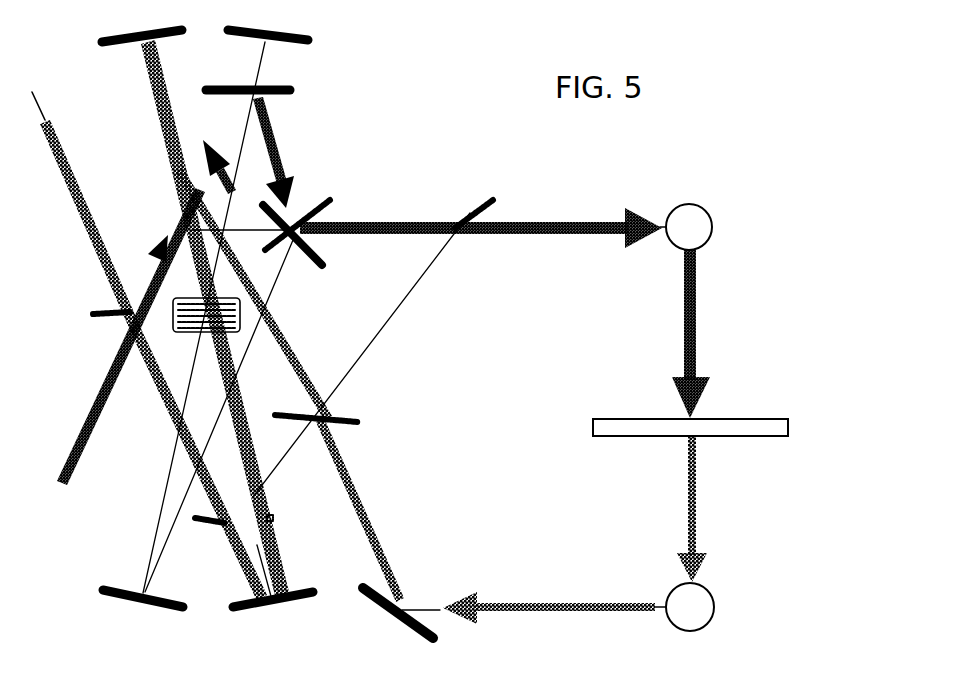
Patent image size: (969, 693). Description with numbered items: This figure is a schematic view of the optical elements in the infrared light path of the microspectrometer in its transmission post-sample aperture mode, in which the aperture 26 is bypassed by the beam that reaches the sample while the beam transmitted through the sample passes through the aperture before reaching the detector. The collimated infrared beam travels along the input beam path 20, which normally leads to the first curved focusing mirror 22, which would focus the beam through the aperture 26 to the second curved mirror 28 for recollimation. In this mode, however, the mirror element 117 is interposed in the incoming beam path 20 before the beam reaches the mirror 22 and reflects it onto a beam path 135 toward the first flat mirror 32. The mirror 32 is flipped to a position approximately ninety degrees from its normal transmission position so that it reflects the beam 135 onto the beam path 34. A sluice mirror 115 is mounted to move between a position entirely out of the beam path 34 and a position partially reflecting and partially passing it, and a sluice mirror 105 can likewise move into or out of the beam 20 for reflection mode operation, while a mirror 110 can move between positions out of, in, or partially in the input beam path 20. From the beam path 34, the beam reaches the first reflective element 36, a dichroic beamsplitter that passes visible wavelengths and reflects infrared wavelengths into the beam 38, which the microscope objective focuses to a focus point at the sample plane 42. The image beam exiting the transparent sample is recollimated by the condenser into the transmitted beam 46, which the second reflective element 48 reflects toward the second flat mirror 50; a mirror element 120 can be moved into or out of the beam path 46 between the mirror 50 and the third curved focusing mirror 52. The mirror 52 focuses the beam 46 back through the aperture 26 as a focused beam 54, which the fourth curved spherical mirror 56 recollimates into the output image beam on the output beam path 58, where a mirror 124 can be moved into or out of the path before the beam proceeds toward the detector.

The input beam path 20 is at (62, 455).
The first curved focusing mirror 22 is at (238, 32).
The aperture 26 is at (168, 328).
The second curved mirror 28 is at (114, 590).
The first flat mirror 32 is at (311, 268).
The beam 34 is at (400, 218).
The first reflective element 36 is at (705, 222).
The beam 38 is at (700, 345).
The sample plane 42 is at (700, 418).
The transmitted beam 46 is at (698, 503).
The second reflective element 48 is at (716, 605).
The second flat mirror 50 is at (405, 625).
The third curved focusing mirror 52 is at (131, 38).
The focused beam 54 is at (165, 152).
The fourth curved spherical mirror 56 is at (262, 607).
The output beam path 58 is at (66, 183).
The sluice mirror 105 is at (93, 315).
The mirror 110 is at (192, 223).
The sluice mirror 115 is at (496, 208).
The mirror element 117 is at (283, 88).
The mirror element 120 is at (358, 424).
The mirror 124 is at (222, 535).
The beam path 135 is at (278, 165).